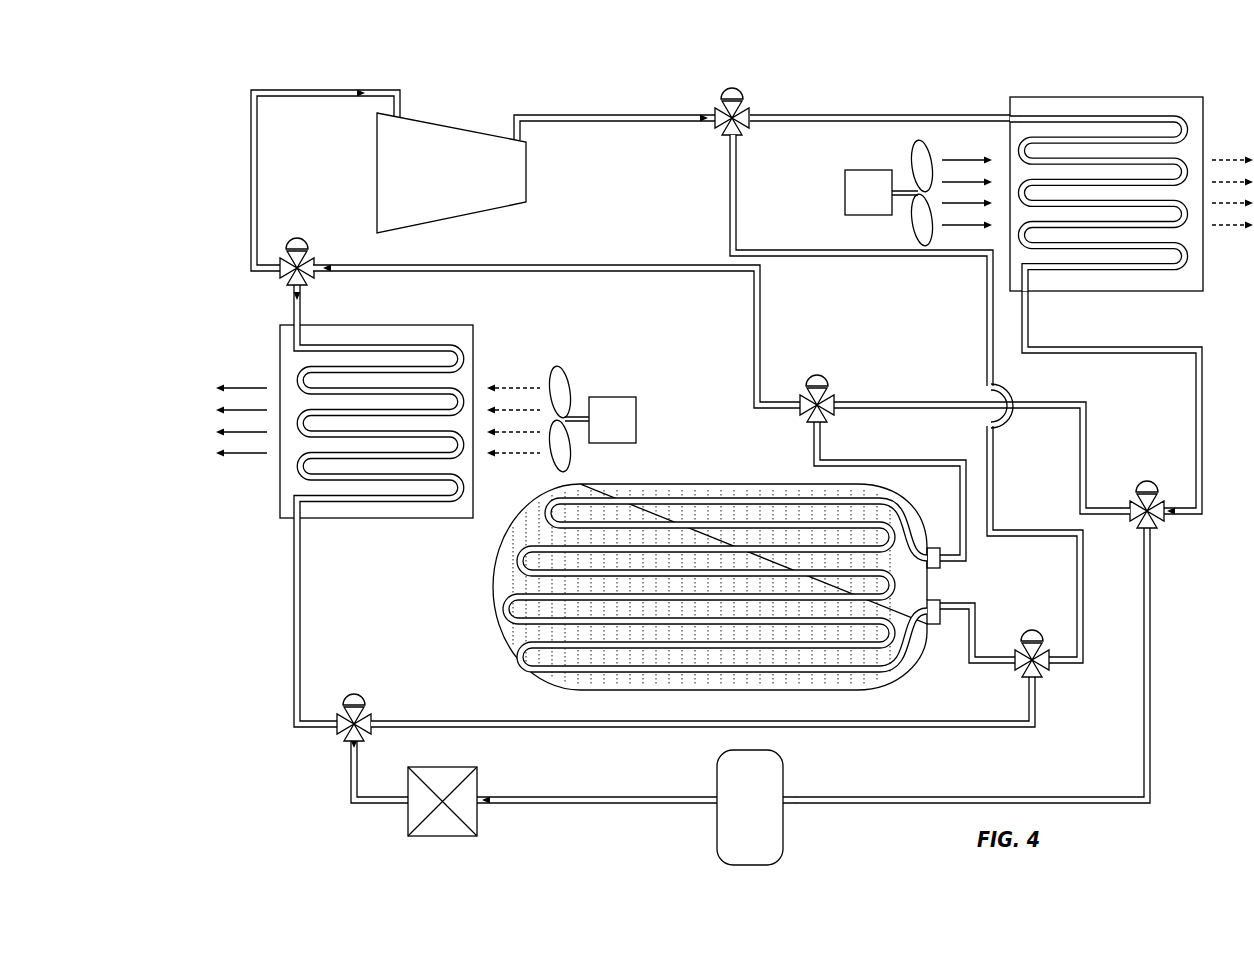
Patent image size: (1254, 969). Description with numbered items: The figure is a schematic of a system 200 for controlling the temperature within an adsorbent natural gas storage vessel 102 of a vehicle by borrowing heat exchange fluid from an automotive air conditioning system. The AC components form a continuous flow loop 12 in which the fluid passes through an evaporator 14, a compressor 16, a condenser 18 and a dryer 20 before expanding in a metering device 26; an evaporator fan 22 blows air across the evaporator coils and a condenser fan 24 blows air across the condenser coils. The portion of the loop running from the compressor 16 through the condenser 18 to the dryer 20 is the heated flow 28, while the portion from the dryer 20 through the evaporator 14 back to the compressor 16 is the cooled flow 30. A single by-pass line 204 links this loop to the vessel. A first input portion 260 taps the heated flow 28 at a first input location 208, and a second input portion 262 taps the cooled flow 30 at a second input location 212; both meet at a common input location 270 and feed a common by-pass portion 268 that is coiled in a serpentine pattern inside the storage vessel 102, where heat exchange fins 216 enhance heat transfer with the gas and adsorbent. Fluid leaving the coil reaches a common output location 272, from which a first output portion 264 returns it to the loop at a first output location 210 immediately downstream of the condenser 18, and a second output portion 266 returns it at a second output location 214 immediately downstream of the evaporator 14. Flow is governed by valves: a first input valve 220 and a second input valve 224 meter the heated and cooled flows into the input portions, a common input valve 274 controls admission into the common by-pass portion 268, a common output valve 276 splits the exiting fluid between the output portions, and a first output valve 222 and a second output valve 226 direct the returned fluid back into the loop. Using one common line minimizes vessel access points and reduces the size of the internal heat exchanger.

The system 200 is at (194, 165).
The continuous flow loop 12 is at (244, 157).
The evaporator 14 is at (278, 493).
The compressor 16 is at (459, 185).
The condenser 18 is at (1153, 96).
The dryer 20 is at (785, 827).
The evaporator fan 22 is at (611, 395).
The condenser fan 24 is at (864, 168).
The metering device 26 is at (480, 780).
The heated flow 28 is at (608, 112).
The cooled flow 30 is at (250, 190).
The adsorbent natural gas storage vessel 102 is at (484, 598).
The by-pass line 204 is at (721, 451).
The first input location 208 is at (768, 90).
The first output location 210 is at (1172, 534).
The second input location 212 is at (320, 748).
The second output location 214 is at (270, 293).
The heat exchange fins 216 is at (735, 484).
The first input valve 220 is at (730, 79).
The first output valve 222 is at (1148, 465).
The second input valve 224 is at (356, 680).
The second output valve 226 is at (298, 227).
The first input portion 260 is at (943, 268).
The second input portion 262 is at (656, 711).
The first output portion 264 is at (954, 390).
The second output portion 266 is at (582, 256).
The common by-pass portion 268 is at (880, 677).
The common input location 270 is at (1054, 678).
The common output location 272 is at (840, 426).
The common input valve 274 is at (1032, 616).
The common output valve 276 is at (815, 371).